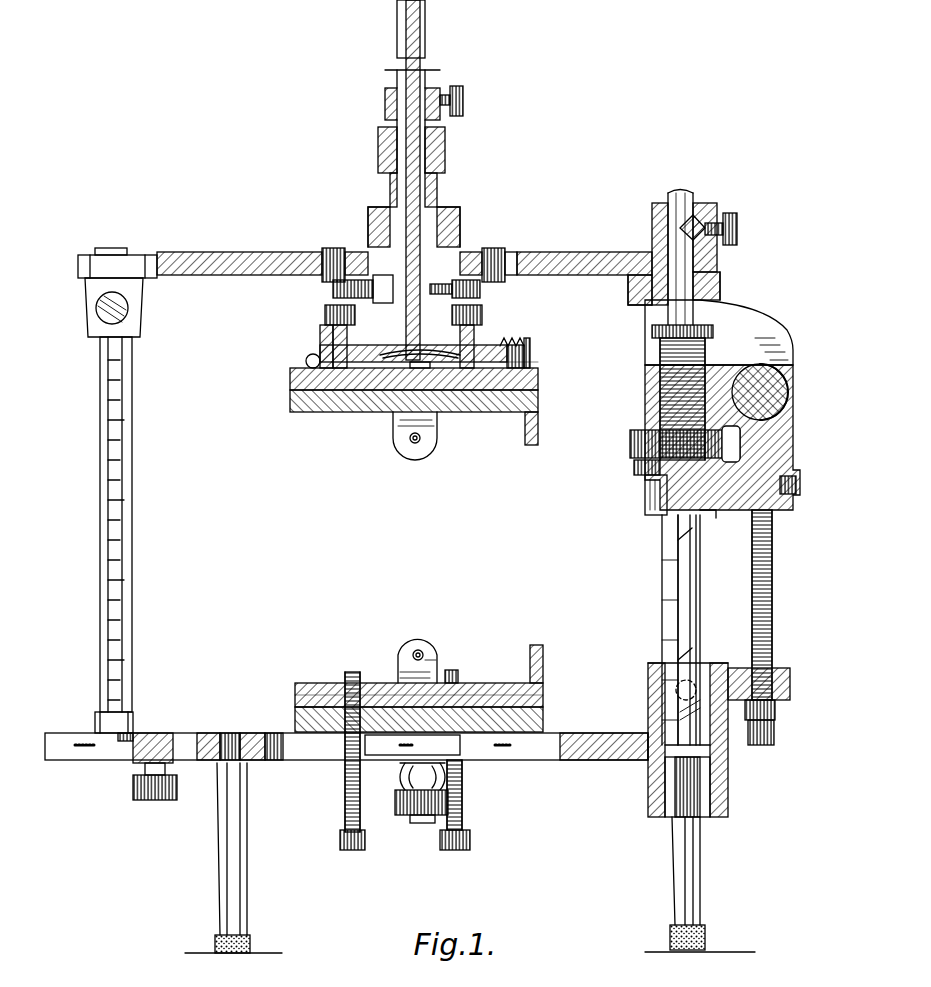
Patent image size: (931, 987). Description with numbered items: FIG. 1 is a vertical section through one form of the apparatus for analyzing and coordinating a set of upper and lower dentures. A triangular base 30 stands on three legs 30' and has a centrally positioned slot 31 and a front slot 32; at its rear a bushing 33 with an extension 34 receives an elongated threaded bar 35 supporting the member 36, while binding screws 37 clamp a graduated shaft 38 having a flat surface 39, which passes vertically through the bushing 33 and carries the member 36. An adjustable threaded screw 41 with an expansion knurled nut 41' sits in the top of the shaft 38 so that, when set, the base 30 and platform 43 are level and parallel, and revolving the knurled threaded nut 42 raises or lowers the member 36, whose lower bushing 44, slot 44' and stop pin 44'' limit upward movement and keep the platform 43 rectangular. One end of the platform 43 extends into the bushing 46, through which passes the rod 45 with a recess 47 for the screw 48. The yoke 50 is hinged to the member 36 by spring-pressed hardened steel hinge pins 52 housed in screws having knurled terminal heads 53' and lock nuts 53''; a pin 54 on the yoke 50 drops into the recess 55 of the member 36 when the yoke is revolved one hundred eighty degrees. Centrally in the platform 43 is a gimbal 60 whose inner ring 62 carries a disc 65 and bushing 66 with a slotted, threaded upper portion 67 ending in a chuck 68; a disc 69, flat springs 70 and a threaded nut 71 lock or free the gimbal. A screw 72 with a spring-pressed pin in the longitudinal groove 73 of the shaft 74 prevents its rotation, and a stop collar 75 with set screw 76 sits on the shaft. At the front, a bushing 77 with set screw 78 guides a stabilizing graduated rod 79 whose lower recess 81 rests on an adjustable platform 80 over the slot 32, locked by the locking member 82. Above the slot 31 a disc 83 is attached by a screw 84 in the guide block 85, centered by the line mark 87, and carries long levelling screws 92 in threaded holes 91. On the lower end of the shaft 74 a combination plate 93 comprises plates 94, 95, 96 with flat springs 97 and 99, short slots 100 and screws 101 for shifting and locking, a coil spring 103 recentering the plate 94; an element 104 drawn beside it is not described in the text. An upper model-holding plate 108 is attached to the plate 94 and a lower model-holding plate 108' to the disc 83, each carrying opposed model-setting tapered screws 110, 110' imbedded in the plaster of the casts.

The triangular base 30 is at (346, 761).
The legs 30' is at (465, 858).
The centrally positioned slot 31 is at (300, 760).
The slot 32 is at (112, 760).
The bushing 33 is at (660, 692).
The extension 34 is at (790, 690).
The elongated threaded bar 35 is at (772, 598).
The member 36 is at (793, 432).
The binding screws 37 is at (682, 668).
The graduated shaft 38 is at (665, 557).
The flat surface 39 is at (682, 580).
The adjustable threaded screw 41 is at (662, 399).
The expansion knurled nut 41' is at (660, 326).
The knurled threaded nut 42 is at (640, 452).
The platform 43 is at (600, 255).
The bushing 44 is at (721, 524).
The slot 44' is at (633, 495).
The stop pin 44'' is at (621, 474).
The rod 45 is at (680, 195).
The bushing 46 is at (708, 205).
The recess 47 is at (680, 228).
The screw 48 is at (737, 220).
The yoke 50 is at (793, 340).
The hinge pin 52 is at (785, 378).
The knurled terminal head 53' is at (796, 379).
The lock nut 53'' is at (798, 406).
The pin 54 is at (720, 290).
The recess 55 is at (800, 485).
The gimbal 60 is at (360, 232).
The inner ring 62 is at (330, 248).
The disc 65 is at (355, 290).
The bushing 66 is at (380, 290).
The upper portion 67 is at (437, 190).
The chuck 68 is at (380, 145).
The disc 69 is at (470, 232).
The flat springs 70 is at (465, 232).
The threaded nut 71 is at (378, 230).
The screw 72 is at (480, 292).
The longitudinal groove 73 is at (385, 68).
The shaft 74 is at (397, 42).
The stop collar 75 is at (385, 100).
The set screw 76 is at (463, 100).
The bushing 77 is at (143, 305).
The set screw 78 is at (128, 318).
The stabilizing graduated rod 79 is at (122, 530).
The adjustable platform 80 is at (168, 733).
The recess 81 is at (130, 712).
The locking member 82 is at (155, 800).
The disc 83 is at (543, 713).
The screw 84 is at (425, 815).
The guide block 85 is at (385, 757).
The line mark 87 is at (440, 680).
The threaded holes 91 is at (310, 714).
The long screw 92 is at (345, 820).
The combination plate 93 is at (316, 340).
The lower plate 94 is at (538, 375).
The plate 95 is at (530, 356).
The upper plate 96 is at (528, 343).
The flat spring 97 is at (430, 375).
The flat spring 99 is at (385, 370).
The short slot 100 is at (375, 345).
The screw 101 is at (325, 313).
The coil spring 103 is at (306, 358).
The pin 104 is at (535, 340).
The upper model-holding plate 108 is at (411, 410).
The lower model-holding plate 108' is at (419, 688).
The model-setting tapered screws 110 is at (405, 444).
The model-setting tapered screws 110' is at (411, 644).